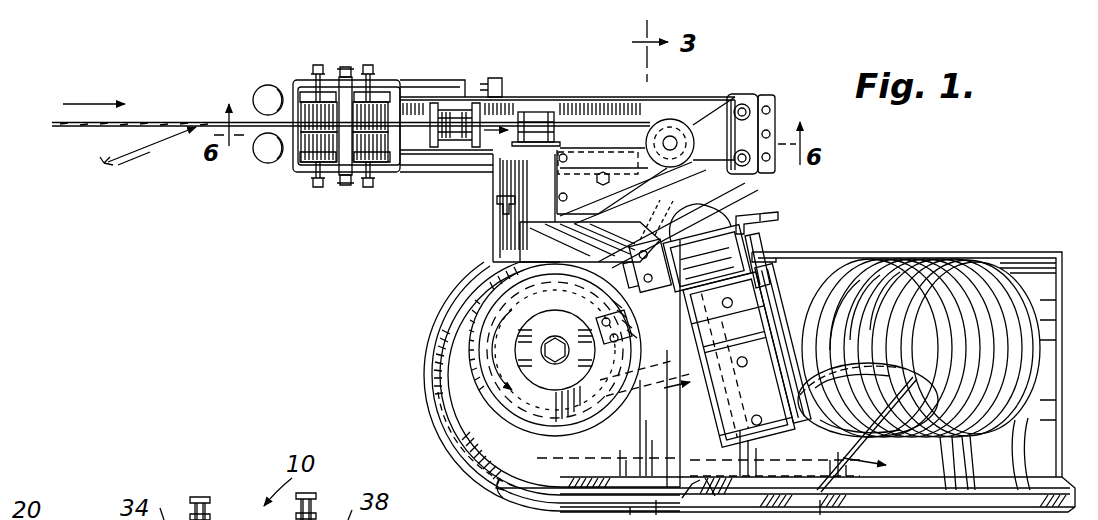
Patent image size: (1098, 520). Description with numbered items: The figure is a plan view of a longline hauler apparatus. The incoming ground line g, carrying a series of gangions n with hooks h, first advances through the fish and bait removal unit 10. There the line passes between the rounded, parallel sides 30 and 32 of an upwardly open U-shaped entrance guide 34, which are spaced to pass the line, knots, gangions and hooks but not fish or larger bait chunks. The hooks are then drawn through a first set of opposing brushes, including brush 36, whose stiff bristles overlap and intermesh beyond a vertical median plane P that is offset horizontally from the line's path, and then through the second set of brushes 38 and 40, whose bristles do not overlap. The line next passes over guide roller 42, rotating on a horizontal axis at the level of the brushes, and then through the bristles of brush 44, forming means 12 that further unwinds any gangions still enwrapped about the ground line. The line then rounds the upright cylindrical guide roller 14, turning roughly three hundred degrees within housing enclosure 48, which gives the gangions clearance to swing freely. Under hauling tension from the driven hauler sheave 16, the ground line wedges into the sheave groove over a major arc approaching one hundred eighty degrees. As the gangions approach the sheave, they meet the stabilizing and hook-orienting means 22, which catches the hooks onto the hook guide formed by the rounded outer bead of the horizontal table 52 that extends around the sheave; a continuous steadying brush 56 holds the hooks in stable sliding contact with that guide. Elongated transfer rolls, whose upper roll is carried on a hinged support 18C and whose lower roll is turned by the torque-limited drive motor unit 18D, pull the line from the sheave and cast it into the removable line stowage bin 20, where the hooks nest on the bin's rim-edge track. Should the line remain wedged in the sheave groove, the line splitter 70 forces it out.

The fish and bait removal unit 10 is at (402, 70).
The gangion unwinding means 12 is at (524, 92).
The direction-changing guide roller 14 is at (682, 122).
The hauler sheave 16 is at (466, 332).
The hinged support 18C is at (748, 208).
The drive motor unit 18D is at (790, 248).
The line stowage bin 20 is at (962, 252).
The stabilizing and hook-orienting means 22 is at (505, 233).
The entrance guide side 30 is at (260, 87).
The entrance guide side 32 is at (272, 163).
The U-shaped entrance guide 34 is at (316, 100).
The brush of the first set 36 is at (318, 145).
The brush of the second set 38 is at (384, 100).
The brush of the second set 40 is at (380, 150).
The guide roller 42 is at (462, 120).
The brush 44 is at (546, 112).
The housing enclosure 48 is at (588, 97).
The horizontal table 52 is at (477, 370).
The steadying brush 56 is at (444, 413).
The line splitter 70 is at (555, 350).
The ground line g is at (150, 121).
The gangion n is at (160, 150).
The hook h is at (104, 164).
The median plane P is at (332, 110).